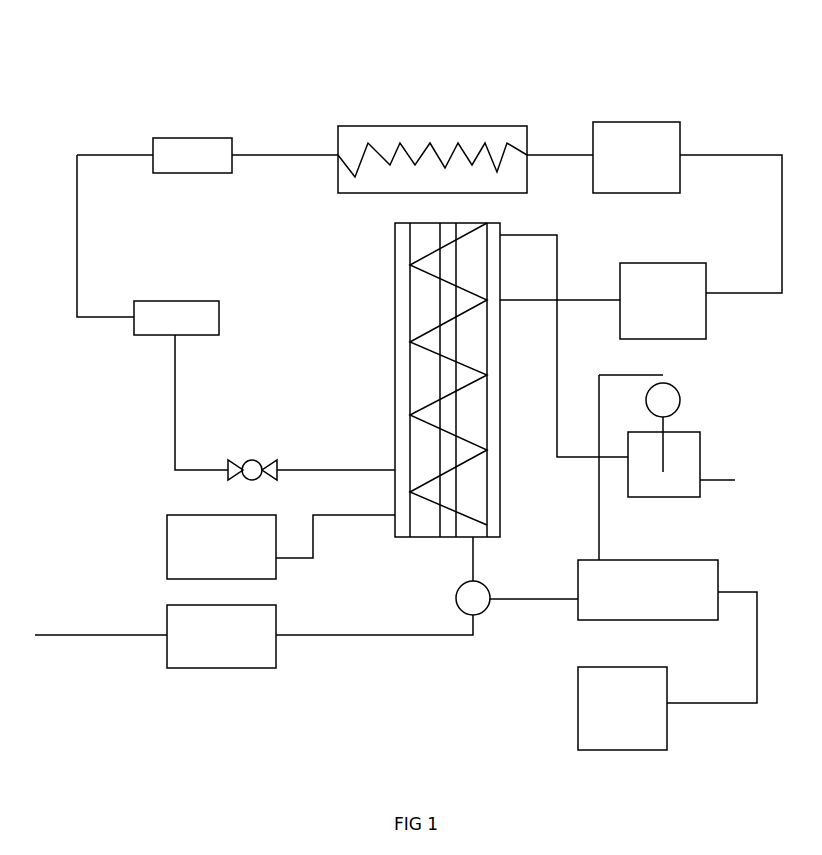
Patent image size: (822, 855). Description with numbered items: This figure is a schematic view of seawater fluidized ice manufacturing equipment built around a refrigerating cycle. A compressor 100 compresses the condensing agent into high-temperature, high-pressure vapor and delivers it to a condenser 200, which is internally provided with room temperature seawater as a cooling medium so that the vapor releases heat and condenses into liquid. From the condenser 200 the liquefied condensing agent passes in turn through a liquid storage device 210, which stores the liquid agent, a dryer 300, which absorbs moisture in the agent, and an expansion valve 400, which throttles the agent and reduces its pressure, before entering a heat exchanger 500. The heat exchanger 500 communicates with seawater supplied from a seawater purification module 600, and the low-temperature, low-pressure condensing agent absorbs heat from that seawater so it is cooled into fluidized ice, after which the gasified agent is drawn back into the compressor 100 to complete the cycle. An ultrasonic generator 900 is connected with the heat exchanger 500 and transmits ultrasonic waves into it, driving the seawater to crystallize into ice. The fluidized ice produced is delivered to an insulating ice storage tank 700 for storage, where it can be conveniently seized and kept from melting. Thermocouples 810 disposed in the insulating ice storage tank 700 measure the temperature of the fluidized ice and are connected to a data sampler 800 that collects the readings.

The compressor 100 is at (678, 325).
The condenser 200 is at (442, 140).
The liquid storage device 210 is at (210, 152).
The dryer 300 is at (160, 320).
The expansion valve 400 is at (258, 462).
The heat exchanger 500 is at (423, 375).
The seawater purification module 600 is at (233, 653).
The insulating ice storage tank 700 is at (695, 450).
The data sampler 800 is at (708, 572).
The thermocouple 810 is at (668, 397).
The ultrasonic generator 900 is at (182, 530).